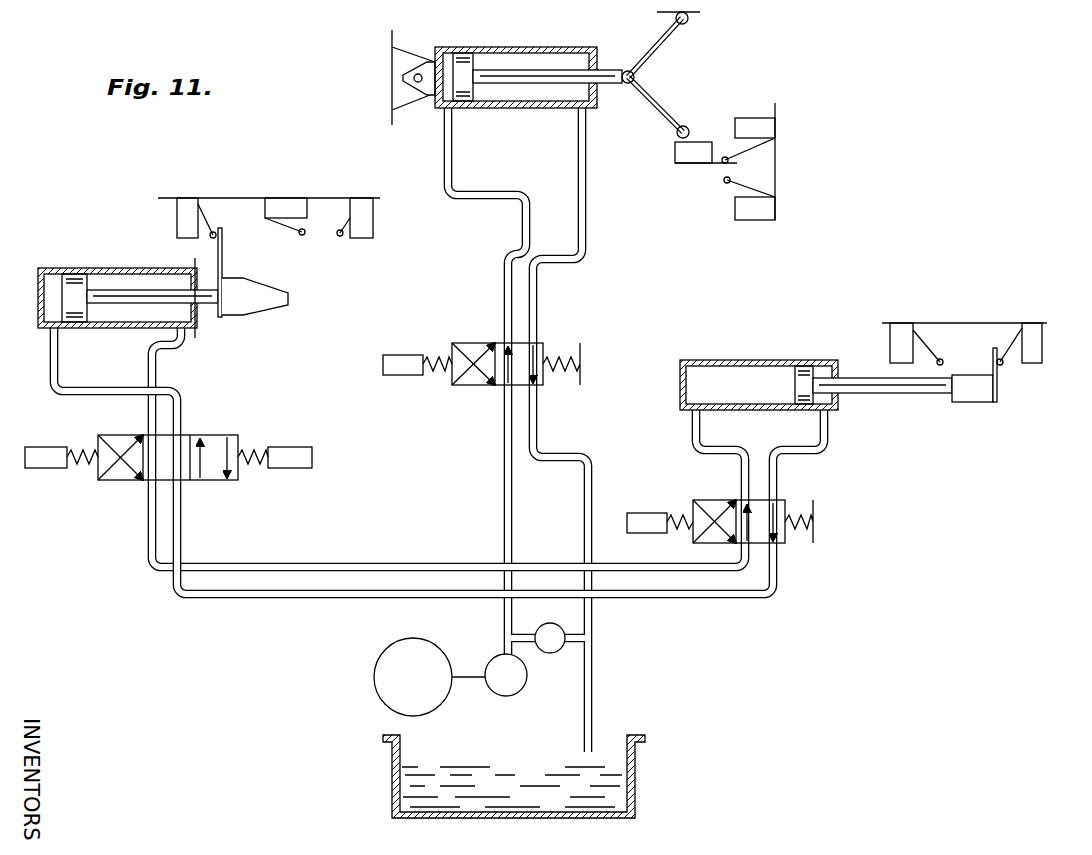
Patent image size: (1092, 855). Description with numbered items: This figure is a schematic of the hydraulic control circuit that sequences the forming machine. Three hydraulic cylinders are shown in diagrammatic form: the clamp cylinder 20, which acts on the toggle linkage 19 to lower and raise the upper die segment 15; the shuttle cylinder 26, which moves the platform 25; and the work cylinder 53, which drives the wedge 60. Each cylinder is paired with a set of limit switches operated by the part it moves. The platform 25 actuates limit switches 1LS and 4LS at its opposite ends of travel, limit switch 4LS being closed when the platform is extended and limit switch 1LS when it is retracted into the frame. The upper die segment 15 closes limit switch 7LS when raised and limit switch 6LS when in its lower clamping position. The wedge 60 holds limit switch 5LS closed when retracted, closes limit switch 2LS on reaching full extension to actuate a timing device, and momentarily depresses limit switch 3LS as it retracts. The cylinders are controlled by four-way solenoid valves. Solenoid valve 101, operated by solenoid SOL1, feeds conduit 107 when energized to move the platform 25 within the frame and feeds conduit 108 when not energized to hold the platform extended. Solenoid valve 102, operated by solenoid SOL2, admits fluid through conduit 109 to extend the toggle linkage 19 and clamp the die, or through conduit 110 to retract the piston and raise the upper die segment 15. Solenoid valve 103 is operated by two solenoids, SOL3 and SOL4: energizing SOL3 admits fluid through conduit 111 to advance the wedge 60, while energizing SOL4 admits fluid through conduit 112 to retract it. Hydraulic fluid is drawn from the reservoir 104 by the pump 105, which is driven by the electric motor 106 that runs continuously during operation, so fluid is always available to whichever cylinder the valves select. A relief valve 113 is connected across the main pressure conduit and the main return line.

The clamp cylinder 20 is at (493, 48).
The toggle linkage 19 is at (664, 76).
The upper die segment 15 is at (675, 152).
The limit switch 7LS is at (753, 122).
The limit switch 6LS is at (758, 210).
The limit switch 5LS is at (184, 214).
The limit switch 3LS is at (280, 210).
The limit switch 2LS is at (362, 206).
The limit switch 1LS is at (890, 336).
The limit switch 4LS is at (1036, 353).
The work cylinder 53 is at (137, 268).
The wedge 60 is at (257, 292).
The conduit 111 is at (51, 363).
The conduit 112 is at (160, 372).
The solenoid valve 103 is at (146, 482).
The solenoid SOL3 is at (50, 444).
The solenoid SOL4 is at (294, 455).
The solenoid SOL2 is at (411, 351).
The solenoid valve 102 is at (494, 343).
The conduit 109 is at (526, 230).
The conduit 110 is at (583, 212).
The shuttle cylinder 26 is at (731, 360).
The platform 25 is at (973, 395).
The conduit 108 is at (693, 437).
The conduit 107 is at (828, 437).
The solenoid SOL1 is at (645, 522).
The solenoid valve 101 is at (735, 500).
The relief valve 113 is at (538, 631).
The pump 105 is at (519, 687).
The electric motor 106 is at (373, 675).
The reservoir 104 is at (405, 760).